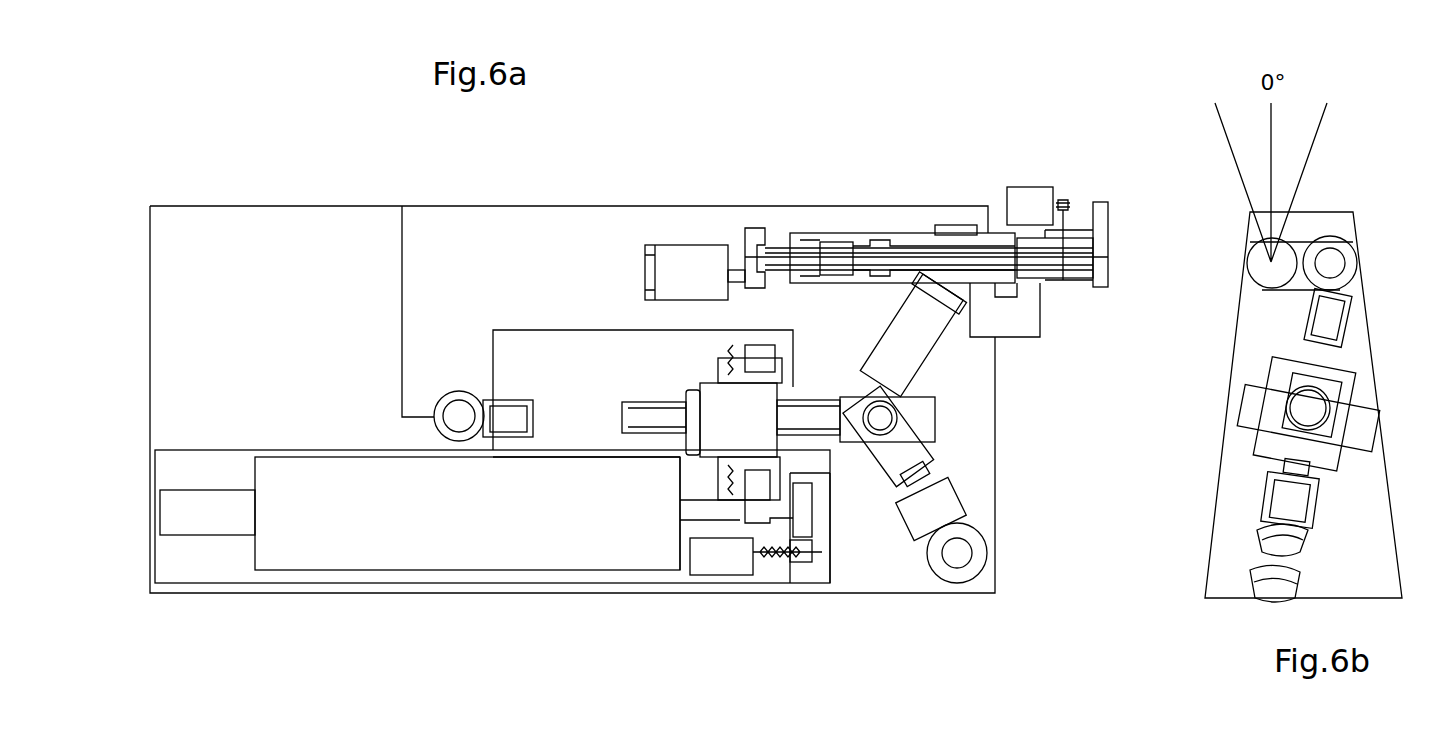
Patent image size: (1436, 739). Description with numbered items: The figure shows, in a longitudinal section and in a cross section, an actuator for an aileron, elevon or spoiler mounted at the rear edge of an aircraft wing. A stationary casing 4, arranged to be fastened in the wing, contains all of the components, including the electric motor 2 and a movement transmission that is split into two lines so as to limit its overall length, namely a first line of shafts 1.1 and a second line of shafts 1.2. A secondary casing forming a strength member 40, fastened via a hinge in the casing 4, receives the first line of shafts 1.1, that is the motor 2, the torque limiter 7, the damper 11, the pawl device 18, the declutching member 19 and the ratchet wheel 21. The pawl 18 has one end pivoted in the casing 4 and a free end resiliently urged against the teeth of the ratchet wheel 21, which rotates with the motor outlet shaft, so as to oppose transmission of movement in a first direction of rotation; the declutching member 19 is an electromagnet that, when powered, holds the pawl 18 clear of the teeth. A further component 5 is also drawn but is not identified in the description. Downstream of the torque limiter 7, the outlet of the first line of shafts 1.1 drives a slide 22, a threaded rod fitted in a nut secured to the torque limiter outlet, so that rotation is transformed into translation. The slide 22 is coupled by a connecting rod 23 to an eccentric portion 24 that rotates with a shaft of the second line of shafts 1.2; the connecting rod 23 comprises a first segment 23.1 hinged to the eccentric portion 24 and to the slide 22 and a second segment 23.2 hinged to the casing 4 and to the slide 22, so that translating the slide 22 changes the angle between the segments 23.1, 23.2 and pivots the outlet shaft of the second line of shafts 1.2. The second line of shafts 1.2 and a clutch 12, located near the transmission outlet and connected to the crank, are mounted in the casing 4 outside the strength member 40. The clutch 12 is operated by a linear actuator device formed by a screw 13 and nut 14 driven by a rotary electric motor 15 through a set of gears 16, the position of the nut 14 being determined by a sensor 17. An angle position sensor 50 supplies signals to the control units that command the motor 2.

In FIG. 6a, the first line of shafts 1.1 is at (650, 383).
In FIG. 6a, the second line of shafts 1.2 is at (1100, 271).
In FIG. 6a, the electric motor 2 is at (450, 550).
In FIG. 6a, the casing 4 is at (336, 206).
In FIG. 6a, the spring 5 is at (725, 480).
In FIG. 6a, the torque limiter 7 is at (698, 413).
In FIG. 6a, the damper 11 is at (195, 525).
In FIG. 6a, the clutch 12 is at (1040, 303).
In FIG. 6a, the screw 13 is at (790, 248).
In FIG. 6a, the nut 14 is at (798, 233).
In FIG. 6a, the rotary electric motor 15 is at (705, 255).
In FIG. 6a, the set of gears 16 is at (762, 235).
In FIG. 6a, the sensor 17 is at (650, 262).
In FIG. 6a, the pawl device 18 is at (806, 563).
In FIG. 6a, the pawl declutching member 19 is at (709, 564).
In FIG. 6a, the ratchet wheel 21 is at (808, 525).
In FIG. 6a, the slide 22 is at (820, 435).
In FIG. 6b, the slide 22 is at (1318, 400).
In FIG. 6a, the connecting rod 23 is at (965, 428).
In FIG. 6b, the connecting rod 23 is at (1255, 450).
In FIG. 6a, the first segment 23.1 is at (928, 331).
In FIG. 6b, the first segment 23.1 is at (1265, 340).
In FIG. 6a, the second segment 23.2 is at (962, 498).
In FIG. 6b, the second segment 23.2 is at (1293, 473).
In FIG. 6a, the eccentric portion 24 is at (955, 225).
In FIG. 6b, the eccentric portion 24 is at (1303, 212).
In FIG. 6a, the strength member 40 is at (310, 583).
In FIG. 6a, the angle position sensor 50 is at (1032, 187).